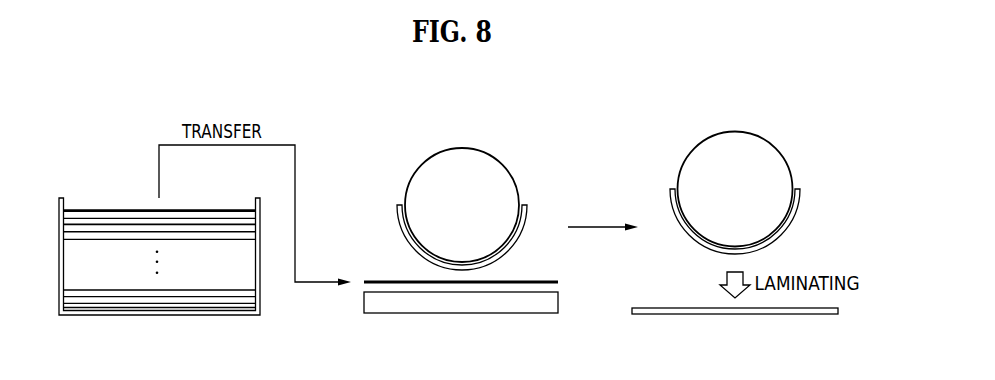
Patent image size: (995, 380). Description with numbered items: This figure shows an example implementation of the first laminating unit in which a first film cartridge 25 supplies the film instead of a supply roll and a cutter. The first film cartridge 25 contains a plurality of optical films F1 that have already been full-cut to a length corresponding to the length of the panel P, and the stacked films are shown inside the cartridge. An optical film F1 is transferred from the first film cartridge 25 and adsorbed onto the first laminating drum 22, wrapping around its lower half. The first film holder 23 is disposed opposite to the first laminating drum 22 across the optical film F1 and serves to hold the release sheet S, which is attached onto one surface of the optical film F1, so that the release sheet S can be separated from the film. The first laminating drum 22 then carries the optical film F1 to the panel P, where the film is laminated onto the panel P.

The first film cartridge 25 is at (76, 176).
The optical film F1 is at (115, 209).
The first laminating drum 22 is at (460, 146).
The release sheet S is at (439, 284).
The first film holder 23 is at (535, 314).
The panel P is at (840, 310).